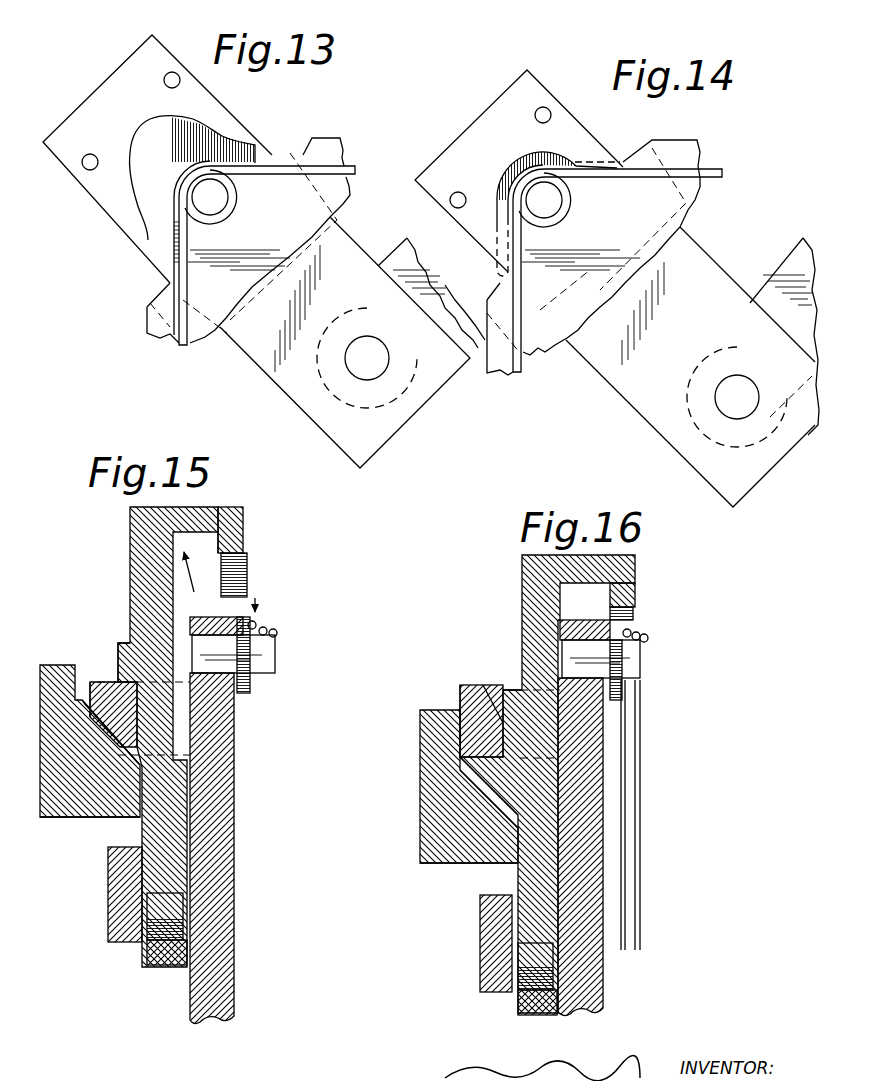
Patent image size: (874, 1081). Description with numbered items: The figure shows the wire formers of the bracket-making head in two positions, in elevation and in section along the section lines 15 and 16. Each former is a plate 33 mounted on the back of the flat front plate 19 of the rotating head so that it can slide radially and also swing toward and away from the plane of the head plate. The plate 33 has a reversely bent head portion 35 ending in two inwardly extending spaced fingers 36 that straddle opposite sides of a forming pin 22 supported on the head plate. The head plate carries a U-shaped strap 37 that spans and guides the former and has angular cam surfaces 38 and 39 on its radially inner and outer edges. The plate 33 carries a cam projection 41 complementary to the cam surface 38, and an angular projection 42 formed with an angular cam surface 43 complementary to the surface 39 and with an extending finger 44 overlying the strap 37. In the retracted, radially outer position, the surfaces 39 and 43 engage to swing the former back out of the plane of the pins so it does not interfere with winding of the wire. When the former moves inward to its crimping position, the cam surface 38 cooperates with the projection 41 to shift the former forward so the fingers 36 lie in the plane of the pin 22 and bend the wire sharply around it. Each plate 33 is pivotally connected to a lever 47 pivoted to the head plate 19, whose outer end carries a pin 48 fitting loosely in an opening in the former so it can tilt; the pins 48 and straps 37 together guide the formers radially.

In FIG. 13, the fixed stub shaft 15 is at (148, 137).
In FIG. 14, the section line 16— 16 is at (488, 140).
In FIG. 13, the flat front plate 19 is at (303, 143).
In FIG. 14, the flat front plate 19 is at (680, 148).
In FIG. 15, the flat front plate 19 is at (227, 867).
In FIG. 16, the flat front plate 19 is at (600, 1005).
In FIG. 13, the forming pin 22 is at (218, 207).
In FIG. 14, the forming pin 22 is at (553, 205).
In FIG. 15, the forming pin 22 is at (277, 658).
In FIG. 16, the forming pin 22 is at (642, 662).
In FIG. 13, the former plate 33 is at (282, 372).
In FIG. 14, the former plate 33 is at (717, 273).
In FIG. 15, the former plate 33 is at (143, 542).
In FIG. 16, the former plate 33 is at (533, 590).
In FIG. 13, the reversely bent head portion 35 is at (113, 127).
In FIG. 14, the reversely bent head portion 35 is at (517, 128).
In FIG. 15, the reversely bent head portion 35 is at (243, 540).
In FIG. 16, the reversely bent head portion 35 is at (633, 590).
In FIG. 13, the spaced fingers 36 is at (128, 220).
In FIG. 14, the spaced fingers 36 is at (603, 155).
In FIG. 15, the spaced fingers 36 is at (242, 597).
In FIG. 16, the spaced fingers 36 is at (637, 615).
In FIG. 13, the U-shaped strap 37 is at (185, 345).
In FIG. 14, the U-shaped strap 37 is at (697, 195).
In FIG. 15, the U-shaped strap 37 is at (93, 682).
In FIG. 16, the U-shaped strap 37 is at (475, 687).
In FIG. 15, the cam surface 38 is at (115, 685).
In FIG. 16, the cam surface 38 is at (497, 687).
In FIG. 15, the cam surface 39 is at (125, 767).
In FIG. 16, the cam surface 39 is at (460, 753).
In FIG. 15, the cam projection 41 is at (127, 643).
In FIG. 16, the cam projection 41 is at (508, 692).
In FIG. 15, the angular projection 42 is at (60, 817).
In FIG. 16, the angular projection 42 is at (435, 858).
In FIG. 15, the angular cam surface 43 is at (80, 718).
In FIG. 16, the angular cam surface 43 is at (477, 783).
In FIG. 15, the extending finger 44 is at (43, 667).
In FIG. 16, the extending finger 44 is at (435, 718).
In FIG. 13, the lever 47 is at (398, 258).
In FIG. 14, the lever 47 is at (793, 260).
In FIG. 15, the lever 47 is at (117, 885).
In FIG. 16, the lever 47 is at (483, 922).
In FIG. 13, the pin 48 is at (367, 348).
In FIG. 14, the pin 48 is at (743, 383).
In FIG. 15, the pin 48 is at (187, 913).
In FIG. 16, the pin 48 is at (537, 990).